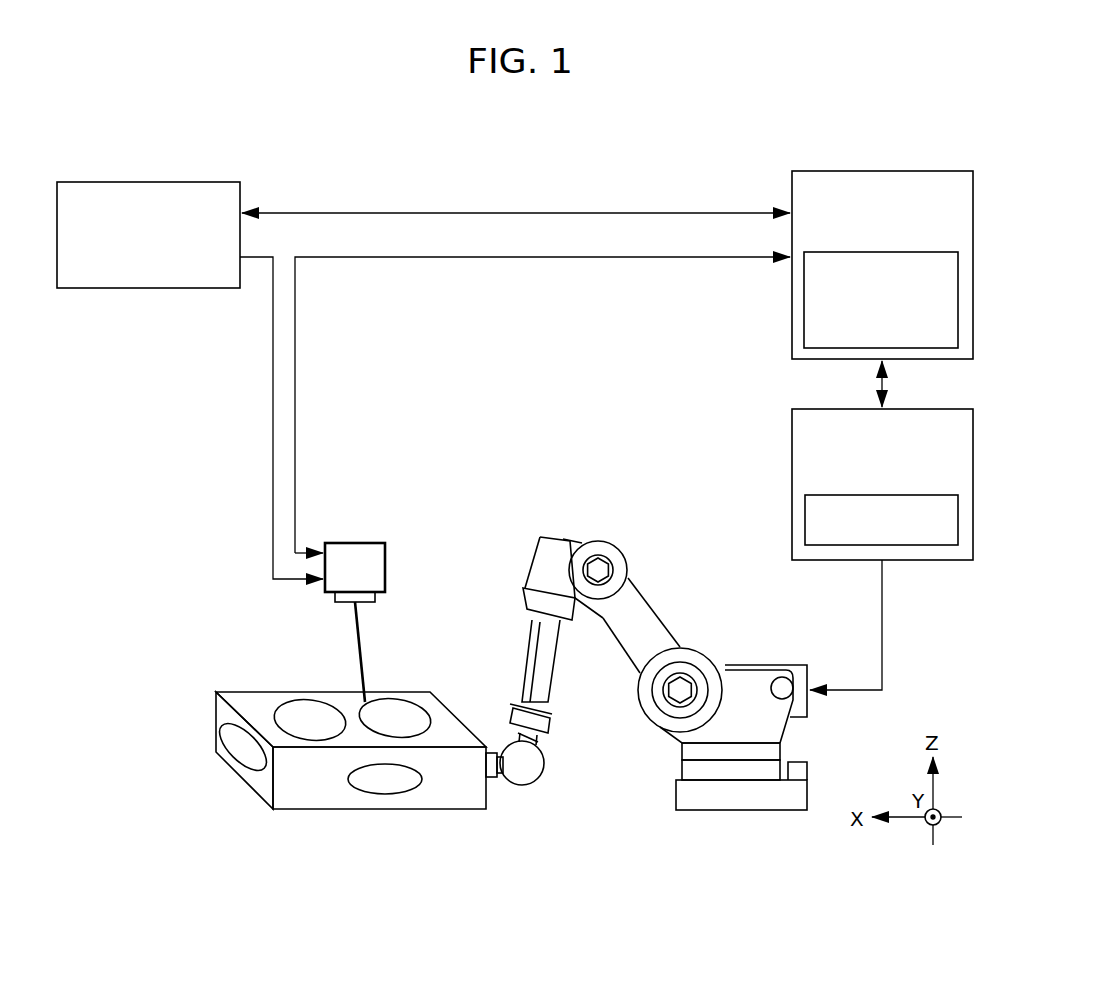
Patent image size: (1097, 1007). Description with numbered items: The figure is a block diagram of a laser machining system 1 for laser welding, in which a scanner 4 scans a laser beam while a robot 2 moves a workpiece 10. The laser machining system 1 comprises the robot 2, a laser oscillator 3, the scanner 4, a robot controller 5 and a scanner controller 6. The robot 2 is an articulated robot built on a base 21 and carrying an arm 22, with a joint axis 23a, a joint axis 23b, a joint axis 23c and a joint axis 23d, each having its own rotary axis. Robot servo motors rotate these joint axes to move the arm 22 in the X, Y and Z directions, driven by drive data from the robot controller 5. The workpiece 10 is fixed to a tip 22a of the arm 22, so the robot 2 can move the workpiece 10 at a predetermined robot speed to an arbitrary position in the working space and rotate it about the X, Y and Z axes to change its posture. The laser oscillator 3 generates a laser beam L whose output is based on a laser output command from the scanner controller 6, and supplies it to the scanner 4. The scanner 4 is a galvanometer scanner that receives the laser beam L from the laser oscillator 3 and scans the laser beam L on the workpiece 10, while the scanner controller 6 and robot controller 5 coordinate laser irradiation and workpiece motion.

The laser machining system 1 is at (616, 163).
The robot 2 is at (638, 651).
The laser oscillator 3 is at (218, 182).
The scanner 4 is at (387, 565).
The robot controller 5 is at (925, 409).
The scanner controller 6 is at (925, 171).
The workpiece 10 is at (257, 692).
The base 21 is at (713, 800).
The arm 22 is at (638, 651).
The tip 22a is at (498, 782).
The joint axis 23a is at (702, 660).
The joint axis 23b is at (626, 552).
The joint axis 23c is at (540, 562).
The joint axis 23d is at (545, 776).
The laser beam L is at (362, 640).